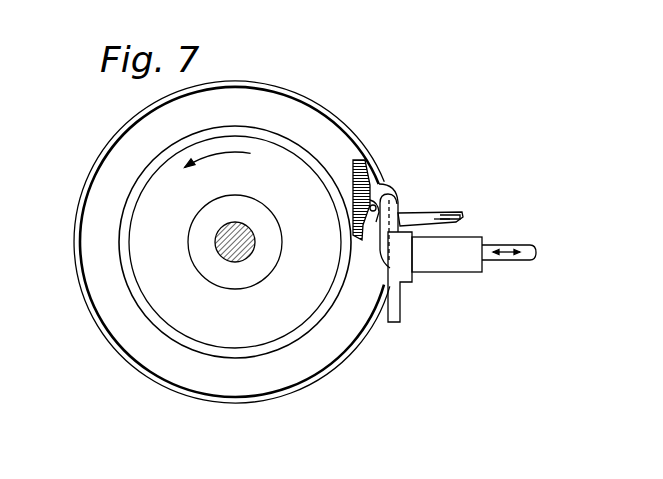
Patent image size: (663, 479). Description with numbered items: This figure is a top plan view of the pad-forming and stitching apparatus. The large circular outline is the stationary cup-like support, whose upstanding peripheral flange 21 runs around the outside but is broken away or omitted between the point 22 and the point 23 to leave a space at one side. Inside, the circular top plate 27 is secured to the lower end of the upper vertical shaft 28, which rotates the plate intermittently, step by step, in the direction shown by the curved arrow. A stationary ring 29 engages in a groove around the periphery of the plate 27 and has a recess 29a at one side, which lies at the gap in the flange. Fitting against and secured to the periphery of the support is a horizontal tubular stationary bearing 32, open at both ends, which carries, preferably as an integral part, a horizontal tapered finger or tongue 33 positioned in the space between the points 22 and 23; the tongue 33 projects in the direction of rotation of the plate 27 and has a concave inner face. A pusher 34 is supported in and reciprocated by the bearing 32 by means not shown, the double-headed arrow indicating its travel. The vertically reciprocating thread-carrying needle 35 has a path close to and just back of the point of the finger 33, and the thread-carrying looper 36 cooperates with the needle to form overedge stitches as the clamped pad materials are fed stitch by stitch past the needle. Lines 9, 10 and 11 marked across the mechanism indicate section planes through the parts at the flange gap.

The position line 9 is at (370, 252).
The position line 10 is at (358, 232).
The position line 11 is at (338, 210).
The upstanding peripheral flange 21 is at (140, 370).
The point 22 is at (382, 184).
The point 23 is at (388, 278).
The circular top plate 27 is at (145, 275).
The upper vertical shaft 28 is at (228, 258).
The stationary ring 29 is at (127, 337).
The recess 29a is at (354, 158).
The horizontal tubular stationary bearing 32 is at (445, 262).
The tapered finger or tongue 33 is at (398, 210).
The pusher 34 is at (488, 263).
The thread-carrying needle 35 is at (390, 203).
The thread-carrying looper 36 is at (434, 221).